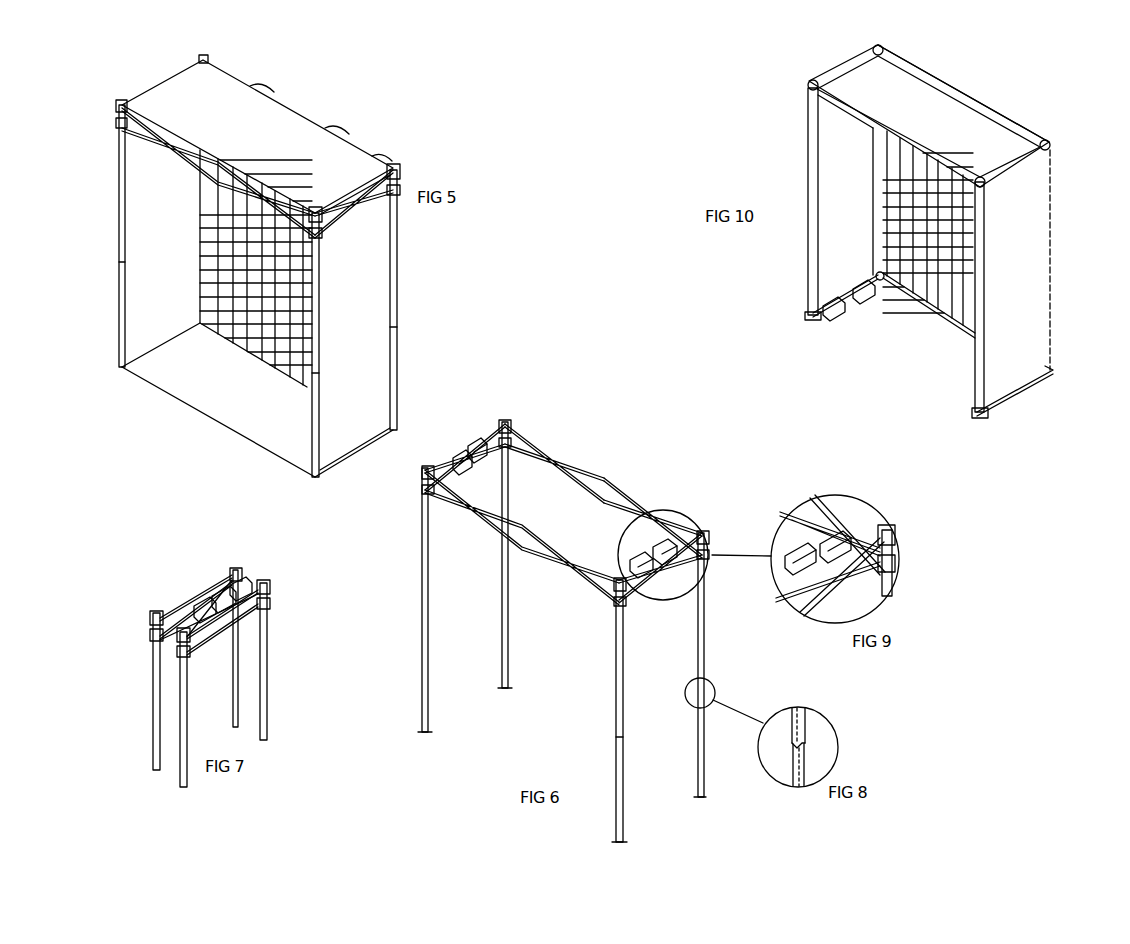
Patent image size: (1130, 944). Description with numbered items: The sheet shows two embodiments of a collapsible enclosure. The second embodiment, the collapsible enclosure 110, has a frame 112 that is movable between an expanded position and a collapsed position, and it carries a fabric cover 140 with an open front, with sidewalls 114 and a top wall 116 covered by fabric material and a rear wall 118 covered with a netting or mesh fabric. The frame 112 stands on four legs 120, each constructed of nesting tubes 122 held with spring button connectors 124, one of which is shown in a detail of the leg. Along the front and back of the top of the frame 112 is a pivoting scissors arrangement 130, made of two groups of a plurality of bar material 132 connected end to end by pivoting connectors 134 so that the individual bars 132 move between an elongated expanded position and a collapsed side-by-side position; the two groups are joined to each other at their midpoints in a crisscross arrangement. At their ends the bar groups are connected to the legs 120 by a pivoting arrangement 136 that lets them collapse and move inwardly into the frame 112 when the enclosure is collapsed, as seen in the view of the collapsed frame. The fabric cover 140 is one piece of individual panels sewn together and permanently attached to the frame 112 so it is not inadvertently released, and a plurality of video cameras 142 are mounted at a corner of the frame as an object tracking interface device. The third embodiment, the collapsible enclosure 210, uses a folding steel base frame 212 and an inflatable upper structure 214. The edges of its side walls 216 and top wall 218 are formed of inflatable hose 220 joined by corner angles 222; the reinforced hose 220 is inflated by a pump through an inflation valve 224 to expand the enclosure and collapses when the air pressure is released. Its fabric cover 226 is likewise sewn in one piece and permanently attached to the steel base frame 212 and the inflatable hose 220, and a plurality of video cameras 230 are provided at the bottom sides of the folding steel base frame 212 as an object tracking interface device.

In FIG. 5, the collapsible enclosure 110 is at (414, 297).
In FIG. 5, the frame 112 is at (400, 342).
In FIG. 6, the frame 112 is at (422, 535).
In FIG. 7, the frame 112 is at (150, 695).
In FIG. 5, the sidewalls 114 is at (355, 290).
In FIG. 5, the top wall 116 is at (252, 133).
In FIG. 5, the rear wall 118 is at (250, 258).
In FIG. 6, the legs 120 is at (705, 655).
In FIG. 8, the legs 120 is at (807, 765).
In FIG. 8, the nesting tubes 122 is at (807, 725).
In FIG. 8, the spring button connectors 124 is at (808, 736).
In FIG. 6, the scissors arrangement 130 is at (560, 452).
In FIG. 9, the scissors arrangement 130 is at (860, 517).
In FIG. 6, the bar material 132 is at (655, 503).
In FIG. 9, the bar material 132 is at (828, 495).
In FIG. 6, the pivoting connectors 134 is at (608, 488).
In FIG. 9, the pivoting arrangement 136 is at (893, 537).
In FIG. 5, the fabric cover 140 is at (357, 377).
In FIG. 5, the video cameras 142 is at (372, 182).
In FIG. 6, the video cameras 142 is at (482, 435).
In FIG. 9, the video cameras 142 is at (885, 563).
In FIG. 10, the collapsible enclosure 210 is at (790, 197).
In FIG. 10, the folding steel base frame 212 is at (912, 310).
In FIG. 10, the inflatable upper structure 214 is at (808, 140).
In FIG. 10, the side walls 216 is at (843, 233).
In FIG. 10, the top wall 218 is at (967, 135).
In FIG. 10, the inflatable hose 220 is at (952, 93).
In FIG. 10, the corner angles 222 is at (1050, 145).
In FIG. 10, the inflation valve 224 is at (803, 307).
In FIG. 10, the fabric cover 226 is at (1005, 342).
In FIG. 10, the video cameras 230 is at (832, 313).